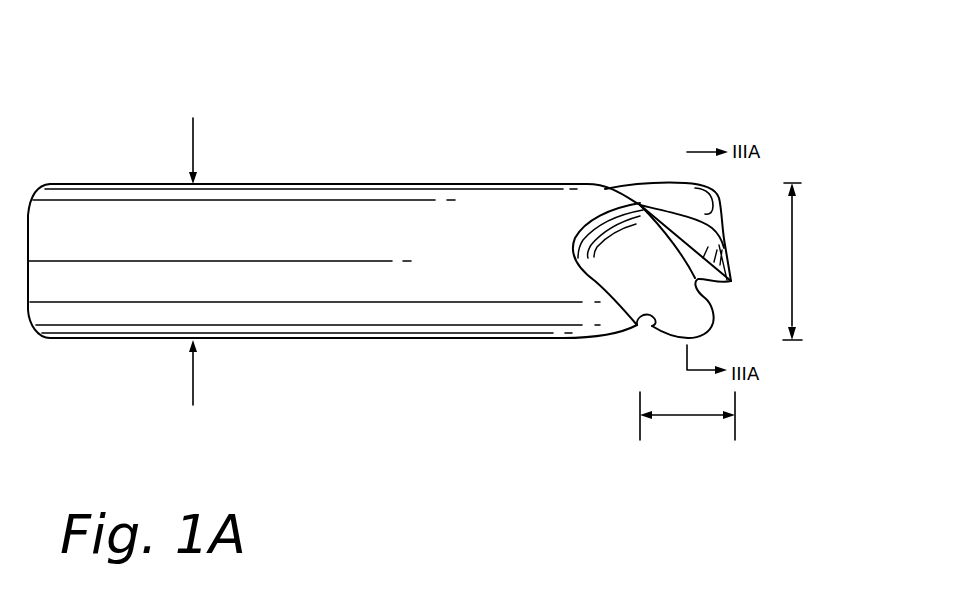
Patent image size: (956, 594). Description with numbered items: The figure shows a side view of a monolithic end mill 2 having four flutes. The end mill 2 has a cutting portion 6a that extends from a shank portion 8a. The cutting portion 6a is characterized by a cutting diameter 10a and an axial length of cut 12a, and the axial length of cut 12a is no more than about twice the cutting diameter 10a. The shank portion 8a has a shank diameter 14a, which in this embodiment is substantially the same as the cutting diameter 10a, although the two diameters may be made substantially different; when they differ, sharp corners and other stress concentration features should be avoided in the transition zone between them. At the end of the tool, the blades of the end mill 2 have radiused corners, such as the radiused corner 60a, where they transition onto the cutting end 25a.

The end mill 2 is at (461, 95).
The cutting portion 6a is at (634, 195).
The shank portion 8a is at (103, 183).
The cutting diameter 10a is at (800, 268).
The axial length of cut 12a is at (687, 415).
The shank diameter 14a is at (193, 130).
The cutting end 25a is at (727, 243).
The radiused corner 60a is at (722, 198).